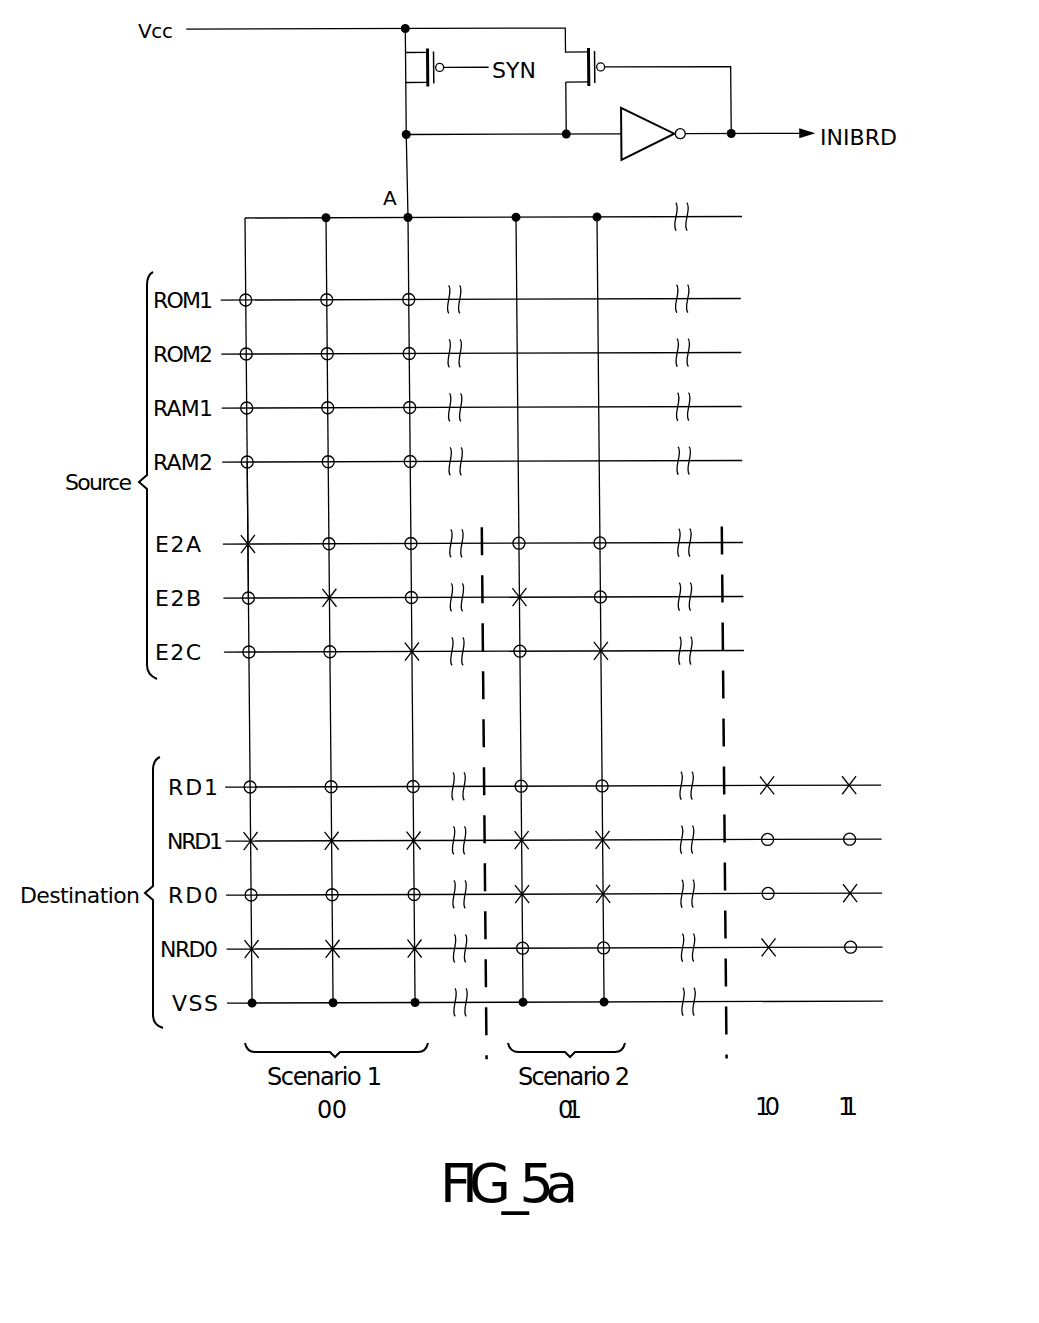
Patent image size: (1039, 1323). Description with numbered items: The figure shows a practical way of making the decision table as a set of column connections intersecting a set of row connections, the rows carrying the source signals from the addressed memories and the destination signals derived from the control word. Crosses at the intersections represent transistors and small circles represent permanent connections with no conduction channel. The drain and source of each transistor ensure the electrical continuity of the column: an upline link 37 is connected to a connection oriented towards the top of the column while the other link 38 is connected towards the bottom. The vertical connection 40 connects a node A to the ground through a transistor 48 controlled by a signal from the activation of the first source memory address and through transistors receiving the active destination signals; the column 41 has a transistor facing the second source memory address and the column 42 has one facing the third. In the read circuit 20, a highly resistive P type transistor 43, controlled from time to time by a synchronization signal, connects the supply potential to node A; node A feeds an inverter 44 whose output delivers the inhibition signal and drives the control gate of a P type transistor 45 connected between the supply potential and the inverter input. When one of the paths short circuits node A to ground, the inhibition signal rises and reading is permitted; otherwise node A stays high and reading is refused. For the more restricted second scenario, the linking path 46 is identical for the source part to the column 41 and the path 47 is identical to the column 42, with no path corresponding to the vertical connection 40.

The read circuit 20 is at (450, 117).
The upline link 37 is at (247, 490).
The other link 38 is at (247, 562).
The vertical connection 40 is at (245, 240).
The column 41 is at (326, 243).
The column 42 is at (408, 243).
The P type transistor 43 is at (410, 68).
The inverter 44 is at (650, 144).
The P type transistor 45 is at (585, 68).
The linking path 46 is at (516, 252).
The path 47 is at (597, 262).
The transistor 48 is at (242, 549).